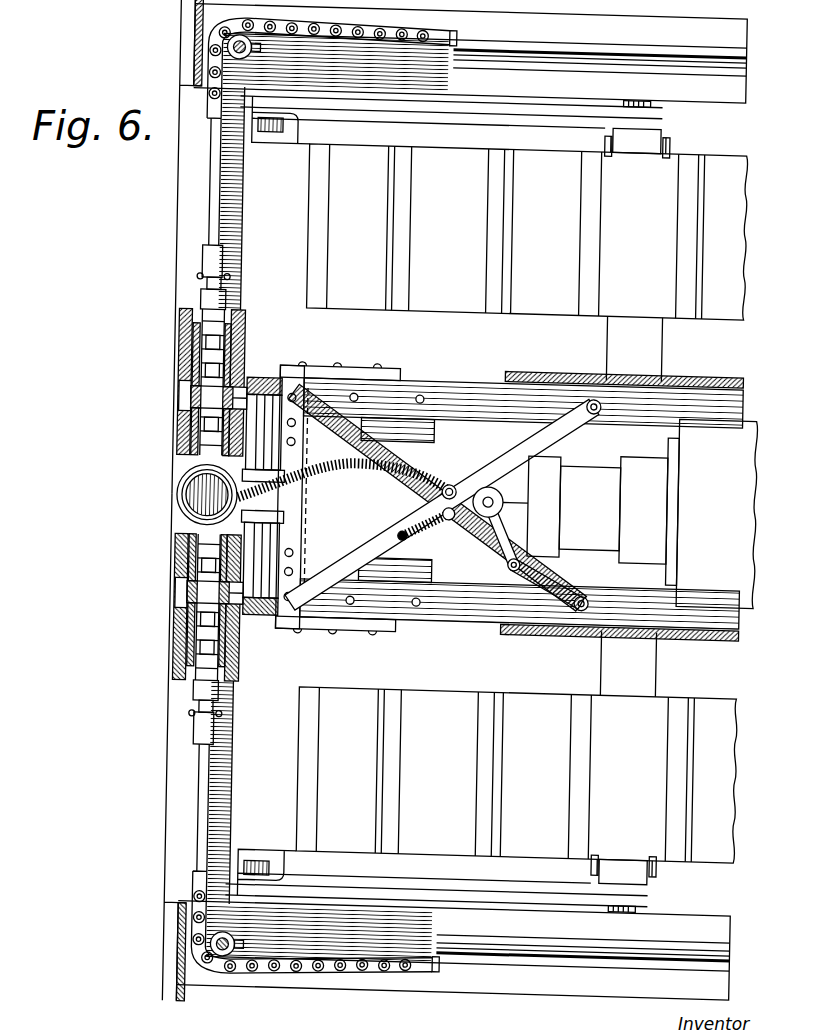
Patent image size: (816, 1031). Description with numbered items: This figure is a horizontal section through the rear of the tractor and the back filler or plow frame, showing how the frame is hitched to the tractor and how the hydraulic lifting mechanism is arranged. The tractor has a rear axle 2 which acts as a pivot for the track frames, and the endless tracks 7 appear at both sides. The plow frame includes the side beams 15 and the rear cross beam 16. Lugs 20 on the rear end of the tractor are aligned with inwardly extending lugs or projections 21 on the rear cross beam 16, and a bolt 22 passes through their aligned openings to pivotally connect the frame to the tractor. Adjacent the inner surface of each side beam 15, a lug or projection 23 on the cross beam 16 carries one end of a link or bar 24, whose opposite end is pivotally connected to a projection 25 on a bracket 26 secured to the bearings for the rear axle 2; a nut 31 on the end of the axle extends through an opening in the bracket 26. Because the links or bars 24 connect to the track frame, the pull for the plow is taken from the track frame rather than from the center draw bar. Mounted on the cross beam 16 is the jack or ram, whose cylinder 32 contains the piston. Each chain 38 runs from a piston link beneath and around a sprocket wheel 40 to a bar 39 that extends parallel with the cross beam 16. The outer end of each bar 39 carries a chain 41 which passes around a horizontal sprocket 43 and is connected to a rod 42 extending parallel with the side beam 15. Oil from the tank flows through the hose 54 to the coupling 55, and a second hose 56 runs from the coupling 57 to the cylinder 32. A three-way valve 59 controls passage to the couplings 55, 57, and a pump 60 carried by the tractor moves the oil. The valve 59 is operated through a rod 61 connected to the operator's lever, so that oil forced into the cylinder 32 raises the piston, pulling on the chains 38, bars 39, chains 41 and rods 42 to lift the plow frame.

The rear axle 2 is at (613, 355).
The endless track 7 is at (357, 295).
The side beam 15 is at (712, 38).
The rear cross beam 16 is at (173, 740).
The lug 20 is at (272, 400).
The lug or projection 21 is at (258, 410).
The bolt 22 is at (182, 455).
The lug or projection 23 is at (260, 122).
The link or bar 24 is at (435, 118).
The projection 25 is at (638, 105).
The bracket 26 is at (662, 130).
The nut 31 is at (670, 145).
The cylinder 32 is at (178, 505).
The chain 38 is at (180, 315).
The bar 39 is at (213, 203).
The sprocket wheel 40 is at (185, 392).
The chain 41 is at (320, 37).
The rod 42 is at (638, 54).
The horizontal sprocket 43 is at (245, 67).
The hose 54 is at (416, 540).
The coupling 55 is at (466, 515).
The hose 56 is at (343, 484).
The coupling 57 is at (448, 476).
The valve 59 is at (505, 503).
The pump 60 is at (600, 473).
The rod 61 is at (697, 613).